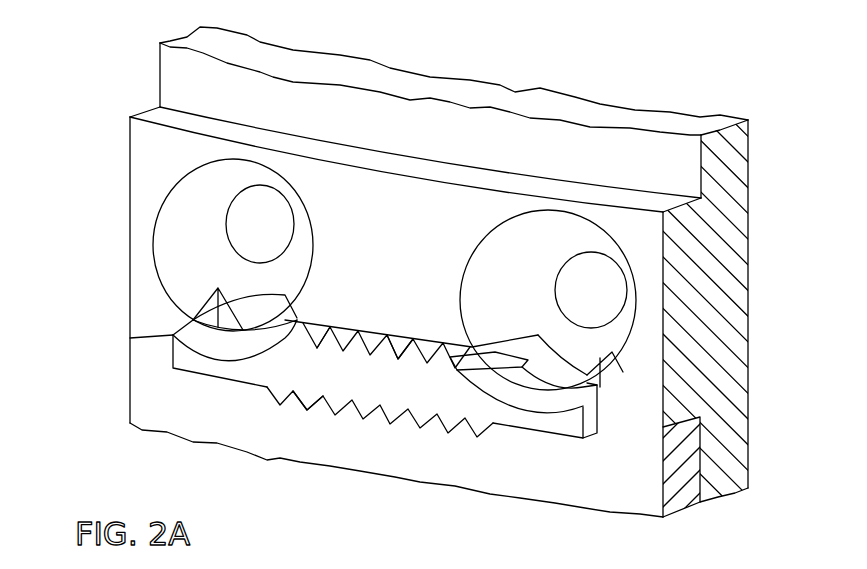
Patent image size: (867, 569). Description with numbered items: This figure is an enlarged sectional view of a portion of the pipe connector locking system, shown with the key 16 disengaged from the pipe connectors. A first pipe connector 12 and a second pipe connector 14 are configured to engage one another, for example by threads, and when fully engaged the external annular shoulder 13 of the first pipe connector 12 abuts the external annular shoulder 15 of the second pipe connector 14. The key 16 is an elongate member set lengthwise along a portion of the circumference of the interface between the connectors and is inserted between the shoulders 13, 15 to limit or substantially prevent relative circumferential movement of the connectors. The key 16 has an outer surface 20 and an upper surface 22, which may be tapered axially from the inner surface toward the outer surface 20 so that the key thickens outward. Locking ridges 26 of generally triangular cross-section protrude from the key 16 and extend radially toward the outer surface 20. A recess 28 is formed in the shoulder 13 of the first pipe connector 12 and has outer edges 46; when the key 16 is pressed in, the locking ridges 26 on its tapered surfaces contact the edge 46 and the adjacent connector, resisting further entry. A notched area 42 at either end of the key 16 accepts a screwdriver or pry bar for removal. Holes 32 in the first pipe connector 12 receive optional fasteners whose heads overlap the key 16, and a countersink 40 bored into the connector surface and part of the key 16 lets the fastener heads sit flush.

The first pipe connector 12 is at (137, 145).
The external annular shoulder 13 is at (684, 435).
The second pipe connector 14 is at (130, 378).
The external annular shoulder 15 is at (684, 420).
The key 16 is at (377, 393).
The outer surface 20 is at (432, 396).
The upper surface 22 is at (340, 316).
The locking ridges 26 is at (378, 341).
The recess 28 is at (613, 357).
The holes 32 is at (228, 231).
The countersink 40 is at (168, 238).
The notched area 42 is at (243, 307).
The outer edges 46 is at (320, 323).